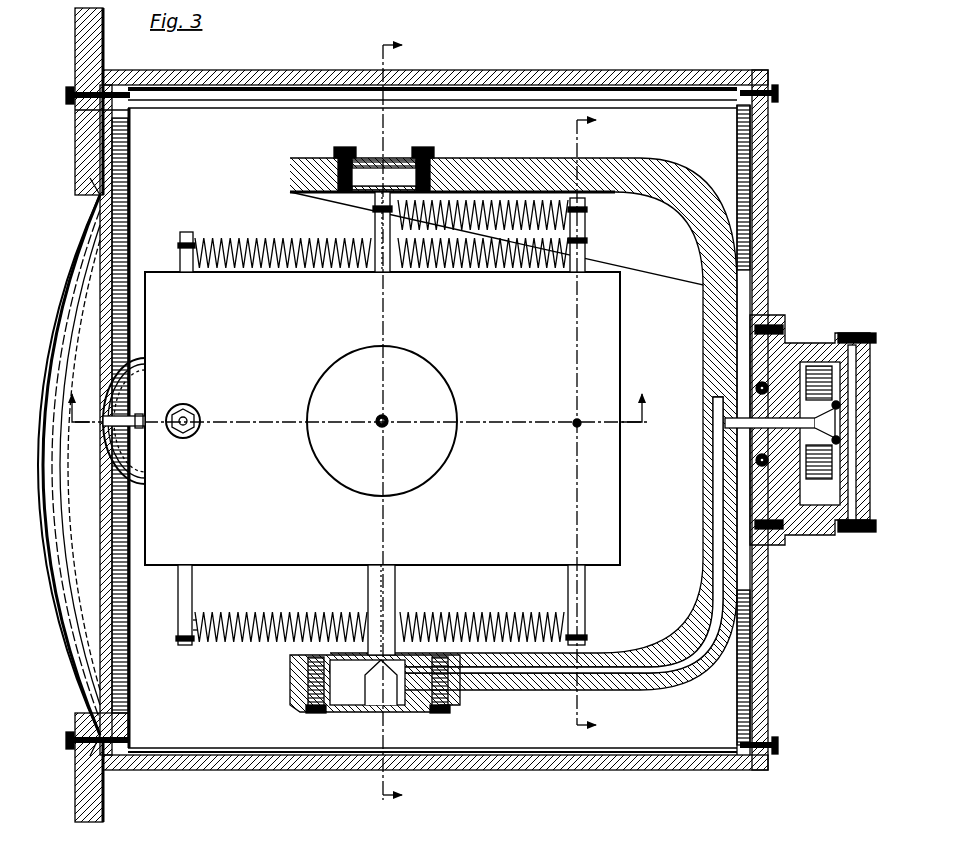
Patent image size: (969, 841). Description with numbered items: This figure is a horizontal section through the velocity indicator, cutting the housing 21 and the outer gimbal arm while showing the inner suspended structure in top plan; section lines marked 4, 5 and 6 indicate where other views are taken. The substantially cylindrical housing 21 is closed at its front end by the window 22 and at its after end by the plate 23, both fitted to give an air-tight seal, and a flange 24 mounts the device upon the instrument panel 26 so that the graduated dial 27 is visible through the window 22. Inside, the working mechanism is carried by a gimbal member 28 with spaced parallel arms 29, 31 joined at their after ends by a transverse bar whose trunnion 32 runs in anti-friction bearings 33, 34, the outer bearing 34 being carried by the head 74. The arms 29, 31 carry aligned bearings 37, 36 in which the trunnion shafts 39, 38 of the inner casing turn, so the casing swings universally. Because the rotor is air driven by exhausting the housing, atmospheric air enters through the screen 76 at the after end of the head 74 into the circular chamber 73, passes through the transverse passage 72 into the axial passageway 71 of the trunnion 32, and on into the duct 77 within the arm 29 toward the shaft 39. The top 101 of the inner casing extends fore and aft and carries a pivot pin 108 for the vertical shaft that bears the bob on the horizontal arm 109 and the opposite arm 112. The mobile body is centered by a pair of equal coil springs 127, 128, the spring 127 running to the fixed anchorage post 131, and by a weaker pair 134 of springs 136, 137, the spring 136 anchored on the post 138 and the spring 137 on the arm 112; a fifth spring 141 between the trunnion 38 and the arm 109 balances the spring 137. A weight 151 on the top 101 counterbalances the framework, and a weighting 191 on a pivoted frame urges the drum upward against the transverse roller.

The housing 21 is at (553, 82).
The window 22 is at (72, 205).
The plate 23 is at (760, 140).
The flange 24 is at (85, 126).
The instrument panel 26 is at (80, 38).
The graduated dial 27 is at (128, 380).
The gimbal member 28 is at (697, 304).
The gimbal arm 29 is at (515, 690).
The gimbal arm 31 is at (527, 170).
The trunnion 32 is at (790, 520).
The anti-friction bearing 33 is at (755, 388).
The anti-friction bearing 34 is at (855, 528).
The anti-friction bearing 36 is at (380, 160).
The anti-friction bearing 37 is at (368, 698).
The trunnion shaft 38 is at (374, 205).
The trunnion shaft 39 is at (370, 583).
The axial passageway 71 is at (716, 452).
The transverse passage 72 is at (841, 428).
The circular chamber 73 is at (822, 482).
The head 74 is at (802, 342).
The screen 76 is at (858, 378).
The duct 77 is at (726, 426).
The top of inner casing 101 is at (515, 390).
The pivot pin 108 is at (579, 422).
The horizontal arm 109 is at (586, 241).
The horizontal arm 112 is at (572, 592).
The coil spring 127 is at (292, 270).
The coil spring 128 is at (318, 232).
The fixed anchorage post 131 is at (180, 238).
The pair of opposed tension springs 134 is at (268, 607).
The coil spring 136 is at (284, 616).
The coil spring 137 is at (470, 618).
The anchorage post 138 is at (178, 638).
The coil spring 141 is at (585, 210).
The weight 151 is at (427, 390).
The weight 191 is at (254, 592).
The section line 4- 4 is at (597, 422).
The section line 5- 5 is at (402, 421).
The section line 6- 6 is at (360, 396).